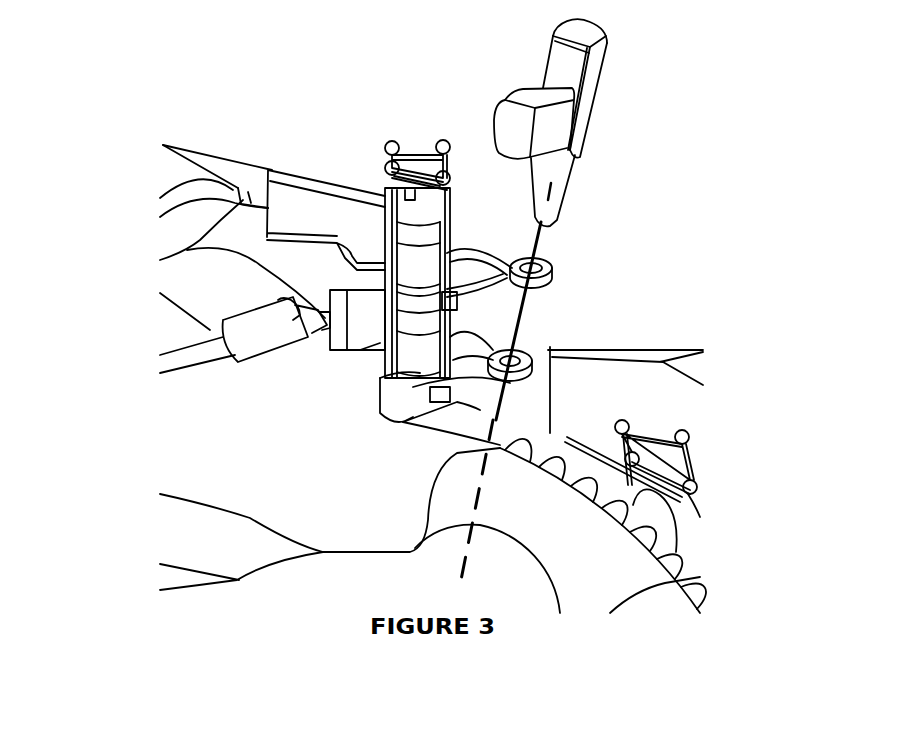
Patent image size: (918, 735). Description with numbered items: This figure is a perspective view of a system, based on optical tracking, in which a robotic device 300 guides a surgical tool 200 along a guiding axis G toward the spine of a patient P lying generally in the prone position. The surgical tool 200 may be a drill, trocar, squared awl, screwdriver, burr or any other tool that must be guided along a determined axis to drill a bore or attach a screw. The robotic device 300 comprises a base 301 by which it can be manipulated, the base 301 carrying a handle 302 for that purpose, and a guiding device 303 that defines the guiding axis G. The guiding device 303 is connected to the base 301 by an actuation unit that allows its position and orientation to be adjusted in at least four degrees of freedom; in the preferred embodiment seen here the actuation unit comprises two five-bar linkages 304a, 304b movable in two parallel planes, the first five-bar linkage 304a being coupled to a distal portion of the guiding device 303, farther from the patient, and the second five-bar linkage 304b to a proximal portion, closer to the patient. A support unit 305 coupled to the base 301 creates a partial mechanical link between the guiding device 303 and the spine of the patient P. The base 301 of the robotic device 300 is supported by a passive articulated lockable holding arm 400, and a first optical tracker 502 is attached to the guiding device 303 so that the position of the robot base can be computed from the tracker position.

The robotic device 300 is at (353, 118).
The base 301 is at (395, 352).
The handle 302 is at (163, 145).
The guiding device 303 is at (527, 318).
The first five-bar linkage 304a is at (473, 245).
The second five-bar linkage 304b is at (473, 397).
The support unit 305 is at (380, 400).
The surgical tool 200 is at (590, 110).
The passive articulated lockable holding arm 400 is at (212, 332).
The first optical tracker 502 is at (662, 440).
The patient P is at (210, 558).
The guiding axis G is at (479, 501).